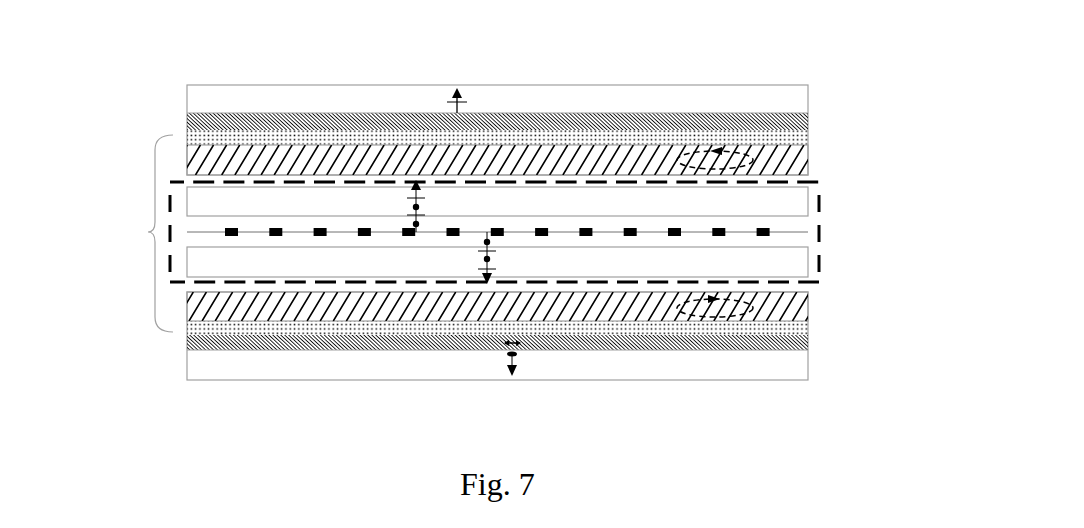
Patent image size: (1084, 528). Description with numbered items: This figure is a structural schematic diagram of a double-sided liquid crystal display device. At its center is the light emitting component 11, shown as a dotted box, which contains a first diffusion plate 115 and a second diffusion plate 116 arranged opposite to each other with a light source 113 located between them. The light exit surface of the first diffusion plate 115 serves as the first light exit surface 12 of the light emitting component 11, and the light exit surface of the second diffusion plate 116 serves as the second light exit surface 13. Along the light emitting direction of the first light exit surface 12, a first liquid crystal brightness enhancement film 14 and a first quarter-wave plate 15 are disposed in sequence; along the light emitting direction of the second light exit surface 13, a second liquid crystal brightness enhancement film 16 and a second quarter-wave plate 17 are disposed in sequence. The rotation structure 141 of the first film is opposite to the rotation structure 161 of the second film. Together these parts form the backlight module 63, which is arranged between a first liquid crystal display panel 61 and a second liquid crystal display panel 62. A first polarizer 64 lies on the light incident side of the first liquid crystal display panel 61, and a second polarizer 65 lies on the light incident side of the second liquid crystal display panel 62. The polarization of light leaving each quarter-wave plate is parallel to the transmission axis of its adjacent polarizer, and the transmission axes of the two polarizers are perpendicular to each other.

The light emitting component 11 is at (819, 239).
The first light exit surface 12 is at (785, 183).
The second light exit surface 13 is at (732, 277).
The first liquid crystal brightness enhancement film 14 is at (802, 157).
The first quarter-wave plate 15 is at (800, 134).
The second liquid crystal brightness enhancement film 16 is at (798, 303).
The second quarter-wave plate 17 is at (800, 325).
The first liquid crystal display panel 61 is at (558, 102).
The second liquid crystal display panel 62 is at (537, 362).
The backlight module 63 is at (142, 233).
The first polarizer 64 is at (682, 113).
The second polarizer 65 is at (658, 350).
The light source 113 is at (198, 233).
The first diffusion plate 115 is at (793, 210).
The second diffusion plate 116 is at (792, 259).
The rotation structure 141 is at (720, 146).
The rotation structure 161 is at (755, 350).